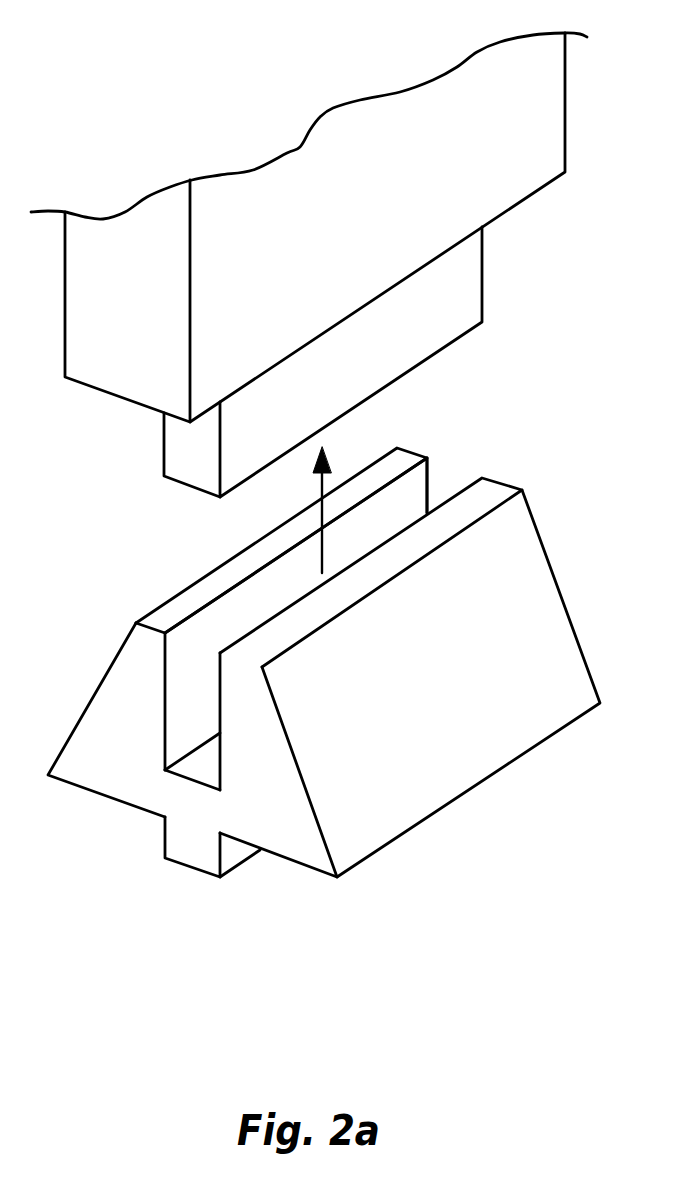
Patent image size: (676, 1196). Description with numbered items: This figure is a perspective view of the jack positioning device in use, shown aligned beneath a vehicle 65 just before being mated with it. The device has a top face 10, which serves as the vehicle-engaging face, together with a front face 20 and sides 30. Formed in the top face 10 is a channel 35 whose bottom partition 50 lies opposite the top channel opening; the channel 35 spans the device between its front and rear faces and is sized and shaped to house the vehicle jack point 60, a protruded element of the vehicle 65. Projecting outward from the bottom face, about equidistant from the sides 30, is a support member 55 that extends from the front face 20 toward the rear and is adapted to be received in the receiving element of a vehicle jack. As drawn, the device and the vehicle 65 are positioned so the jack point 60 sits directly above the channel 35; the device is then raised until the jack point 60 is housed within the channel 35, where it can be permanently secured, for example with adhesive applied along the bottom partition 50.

The top face 10 is at (362, 490).
The front face 20 is at (103, 750).
The sides 30 is at (435, 699).
The channel 35 is at (340, 552).
The bottom partition 50 is at (195, 767).
The support member 55 is at (187, 872).
The vehicle jack point 60 is at (348, 359).
The vehicle 65 is at (348, 216).